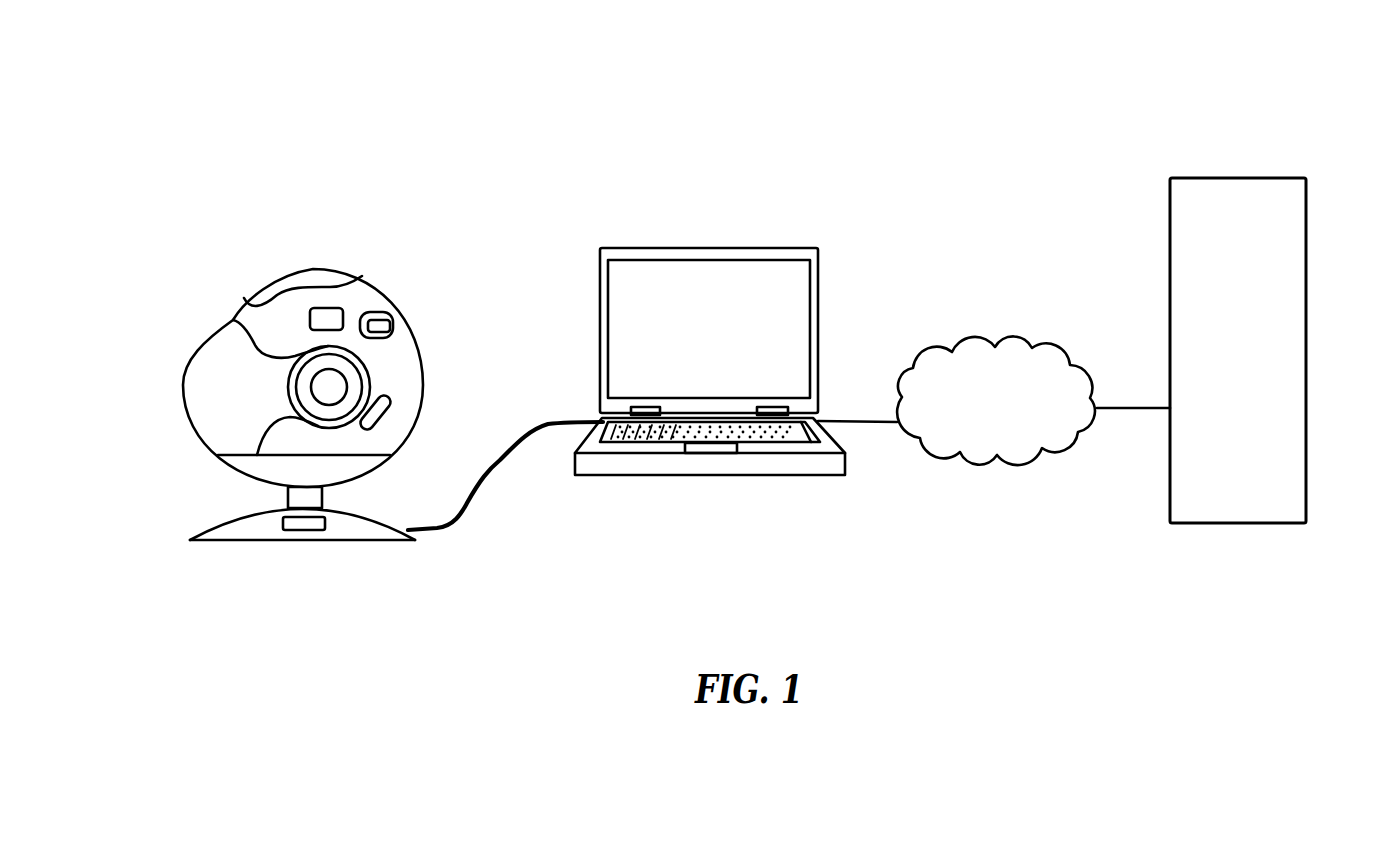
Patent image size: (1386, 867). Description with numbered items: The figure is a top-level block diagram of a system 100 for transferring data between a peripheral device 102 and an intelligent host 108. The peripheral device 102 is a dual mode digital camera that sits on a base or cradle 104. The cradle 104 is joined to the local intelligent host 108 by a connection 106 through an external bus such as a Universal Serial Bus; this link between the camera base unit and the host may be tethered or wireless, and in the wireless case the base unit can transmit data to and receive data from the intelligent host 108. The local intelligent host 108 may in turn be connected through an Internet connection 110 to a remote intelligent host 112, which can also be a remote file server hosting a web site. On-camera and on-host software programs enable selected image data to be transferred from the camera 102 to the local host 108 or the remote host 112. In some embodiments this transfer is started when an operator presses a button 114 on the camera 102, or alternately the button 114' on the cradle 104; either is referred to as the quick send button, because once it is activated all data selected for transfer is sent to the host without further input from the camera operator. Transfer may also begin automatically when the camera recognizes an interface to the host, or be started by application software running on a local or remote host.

The system 100 is at (848, 67).
The peripheral device 102 is at (312, 270).
The cradle 104 is at (236, 474).
The connection 106 is at (526, 443).
The intelligent host 108 is at (757, 248).
The Internet connection 110 is at (980, 335).
The remote intelligent host 112 is at (1306, 227).
The button 114 is at (423, 392).
The button 114' is at (355, 507).